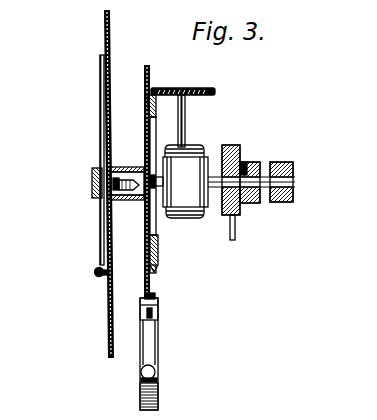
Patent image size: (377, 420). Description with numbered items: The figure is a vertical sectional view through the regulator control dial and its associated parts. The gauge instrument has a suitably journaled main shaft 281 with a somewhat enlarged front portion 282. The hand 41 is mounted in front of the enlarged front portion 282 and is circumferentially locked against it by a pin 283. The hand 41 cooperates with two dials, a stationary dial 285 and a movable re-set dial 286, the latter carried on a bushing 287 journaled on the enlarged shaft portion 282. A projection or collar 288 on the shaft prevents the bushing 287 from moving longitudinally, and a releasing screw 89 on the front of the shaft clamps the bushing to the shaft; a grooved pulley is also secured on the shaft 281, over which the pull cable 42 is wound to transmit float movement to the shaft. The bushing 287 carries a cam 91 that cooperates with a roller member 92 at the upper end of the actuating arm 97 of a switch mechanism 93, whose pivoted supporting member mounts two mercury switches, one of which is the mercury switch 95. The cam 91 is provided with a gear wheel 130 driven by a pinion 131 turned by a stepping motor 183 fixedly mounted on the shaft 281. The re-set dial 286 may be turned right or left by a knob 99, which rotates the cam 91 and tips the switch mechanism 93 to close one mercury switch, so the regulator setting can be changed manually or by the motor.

The stationary dial 285 is at (104, 27).
The hand 41 is at (104, 117).
The movable re-set dial 286 is at (111, 98).
The collar 288 is at (153, 193).
The pinion 131 is at (215, 91).
The gear wheel 130 is at (155, 115).
The motor 183 is at (194, 147).
The enlarged front portion 282 is at (127, 200).
The bushing 287 is at (125, 167).
The pin 283 is at (92, 170).
The releasing screw 89 is at (92, 192).
The main shaft 281 is at (287, 161).
The pull cable 42 is at (236, 236).
The knob 99 is at (95, 271).
The cam 91 is at (155, 278).
The roller member 92 is at (158, 297).
The actuating arm 97 is at (158, 341).
The mercury switch 95 is at (141, 372).
The switch mechanism 93 is at (158, 398).